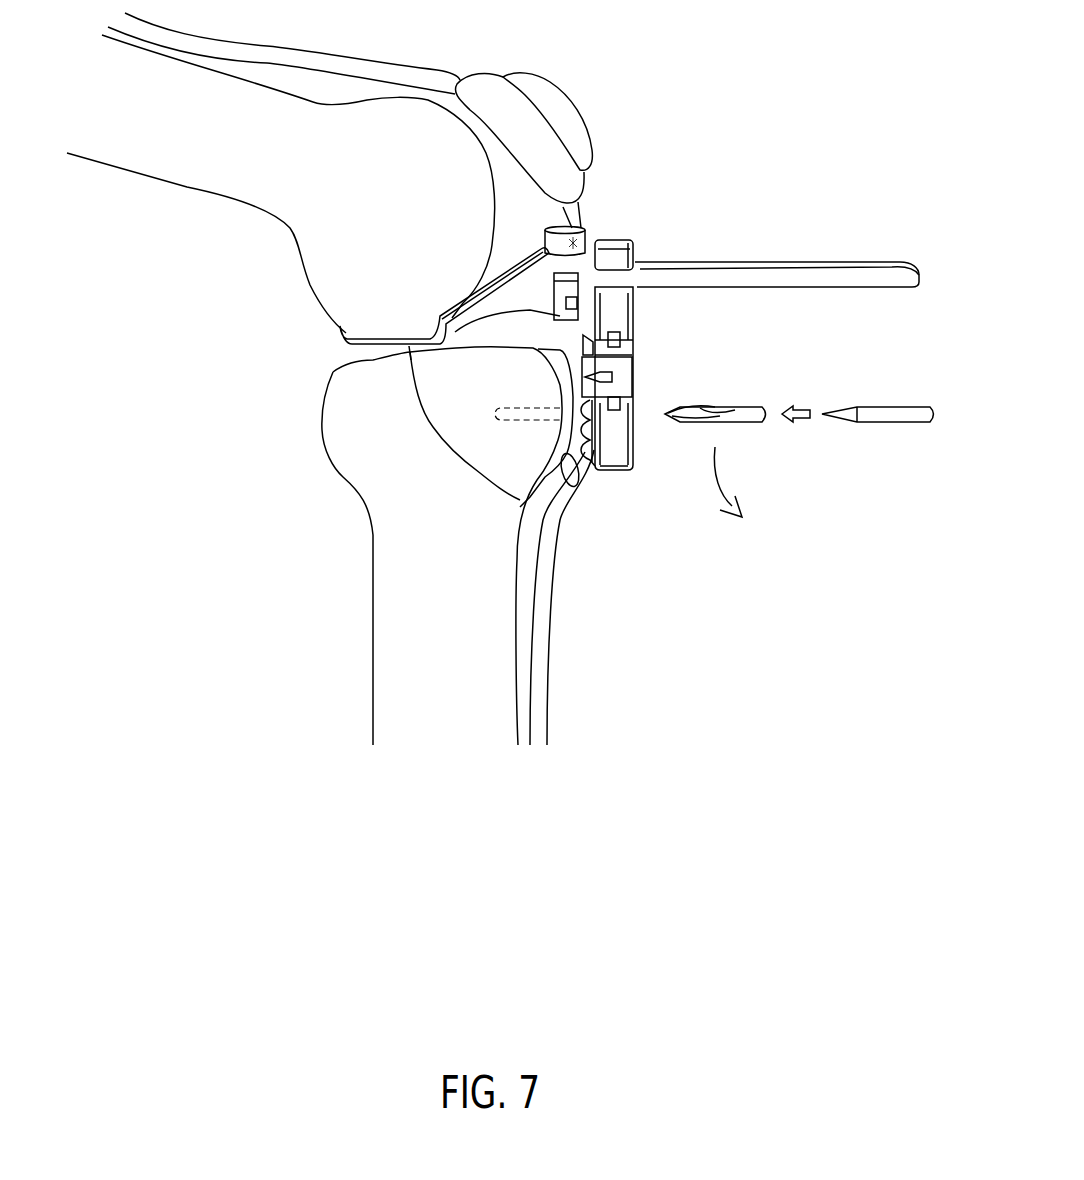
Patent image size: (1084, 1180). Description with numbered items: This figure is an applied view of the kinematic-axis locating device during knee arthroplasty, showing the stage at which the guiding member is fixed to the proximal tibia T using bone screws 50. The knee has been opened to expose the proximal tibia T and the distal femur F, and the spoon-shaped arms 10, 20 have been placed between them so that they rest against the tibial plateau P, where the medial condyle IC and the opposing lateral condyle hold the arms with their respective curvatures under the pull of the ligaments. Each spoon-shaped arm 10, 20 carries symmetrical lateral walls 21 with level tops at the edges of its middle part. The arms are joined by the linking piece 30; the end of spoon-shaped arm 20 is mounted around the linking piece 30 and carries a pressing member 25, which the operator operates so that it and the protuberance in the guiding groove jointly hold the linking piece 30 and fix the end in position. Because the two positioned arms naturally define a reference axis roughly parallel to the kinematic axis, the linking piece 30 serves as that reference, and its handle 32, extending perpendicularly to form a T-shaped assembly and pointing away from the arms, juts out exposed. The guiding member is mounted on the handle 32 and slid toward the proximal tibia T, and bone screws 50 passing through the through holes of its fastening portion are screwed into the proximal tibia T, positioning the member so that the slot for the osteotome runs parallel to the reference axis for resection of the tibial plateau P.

The spoon-shaped arm 10 is at (511, 286).
The spoon-shaped arm 20 is at (520, 500).
The lateral wall 21 is at (580, 267).
The pressing member 25 is at (578, 230).
The linking piece 30 is at (572, 320).
The handle 32 is at (788, 275).
The bone screw 50 is at (895, 421).
The distal femur F is at (205, 172).
The proximal tibia T is at (388, 593).
The tibial plateau P is at (358, 365).
The medial condyle IC is at (338, 287).